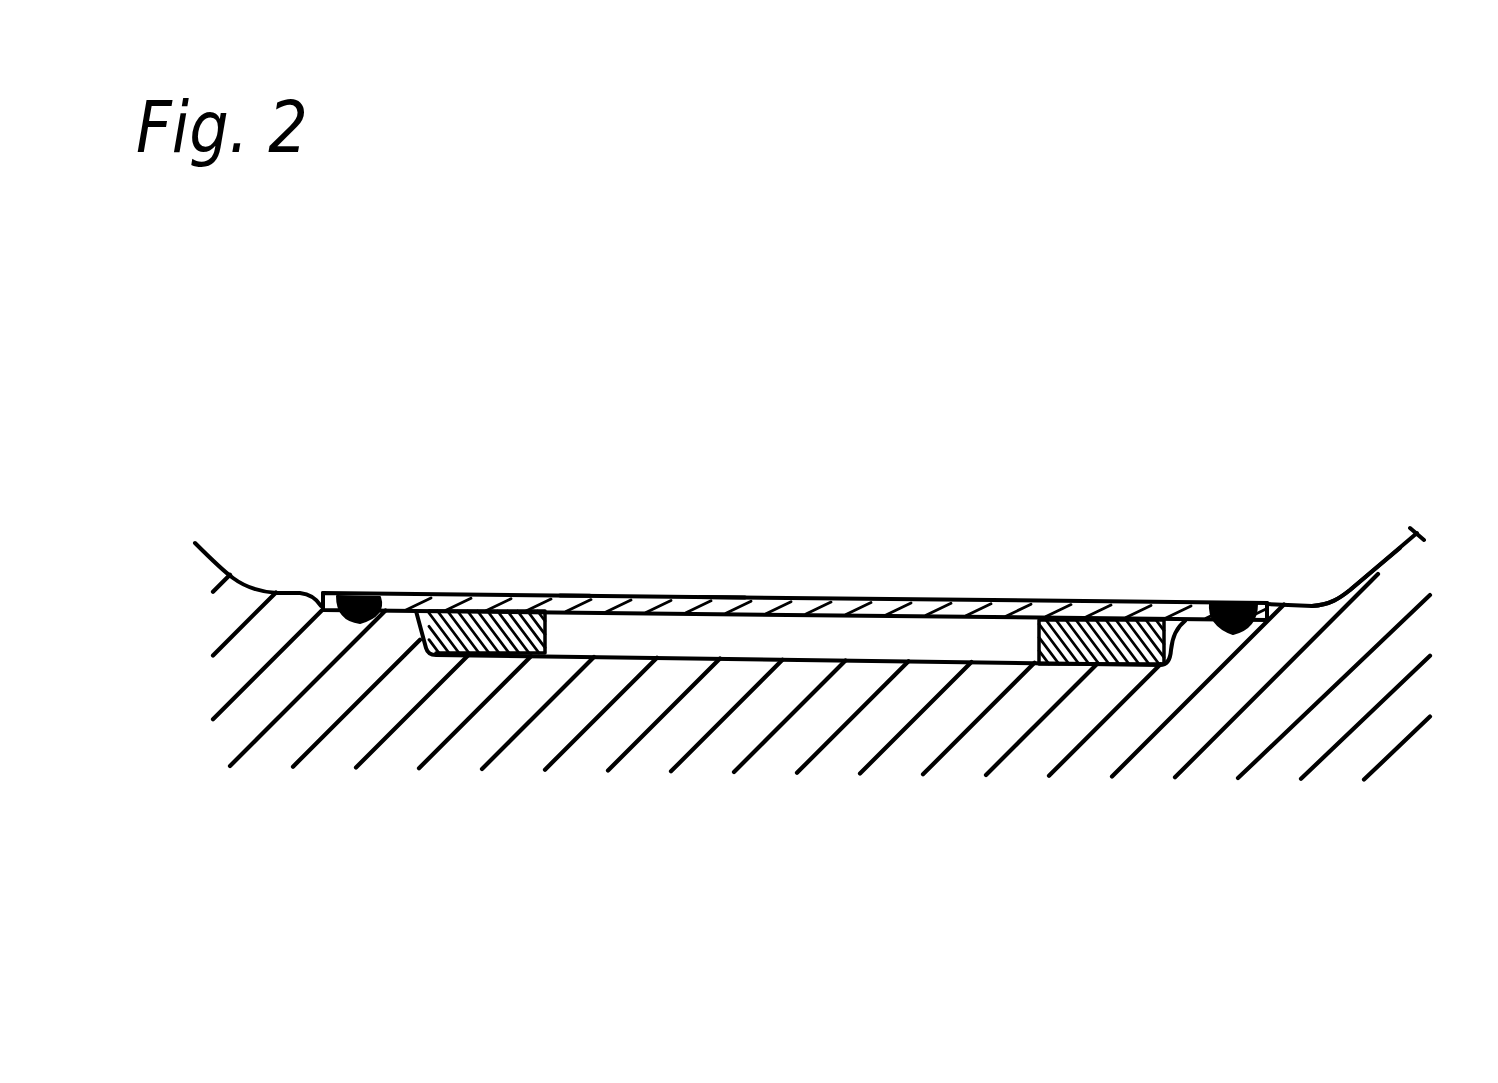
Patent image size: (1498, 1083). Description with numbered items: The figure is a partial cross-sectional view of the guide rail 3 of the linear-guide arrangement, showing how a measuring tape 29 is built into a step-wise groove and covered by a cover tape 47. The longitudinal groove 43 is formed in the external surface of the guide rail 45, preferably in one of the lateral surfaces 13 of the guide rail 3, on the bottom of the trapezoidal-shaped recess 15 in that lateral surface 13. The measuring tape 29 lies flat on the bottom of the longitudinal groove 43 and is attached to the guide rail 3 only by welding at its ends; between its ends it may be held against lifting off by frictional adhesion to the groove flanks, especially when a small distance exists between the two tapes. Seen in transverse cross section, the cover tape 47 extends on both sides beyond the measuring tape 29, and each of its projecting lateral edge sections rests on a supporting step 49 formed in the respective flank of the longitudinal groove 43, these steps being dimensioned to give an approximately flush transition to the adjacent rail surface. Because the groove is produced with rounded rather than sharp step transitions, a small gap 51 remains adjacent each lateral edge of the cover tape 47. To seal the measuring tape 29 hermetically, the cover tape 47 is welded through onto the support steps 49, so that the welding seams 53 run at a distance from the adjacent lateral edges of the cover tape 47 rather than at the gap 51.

The guide rail 3 is at (1488, 661).
The lateral surface 13 is at (1283, 602).
The trapezoidal-shaped recess 15 is at (945, 580).
The measuring tape 29 is at (573, 596).
The longitudinal groove 43 is at (638, 637).
The external surface of the guide rail 45 is at (1374, 566).
The cover tape 47 is at (722, 597).
The supporting step 49 is at (327, 607).
The gap 51 is at (320, 596).
The welding seam 53 is at (358, 592).